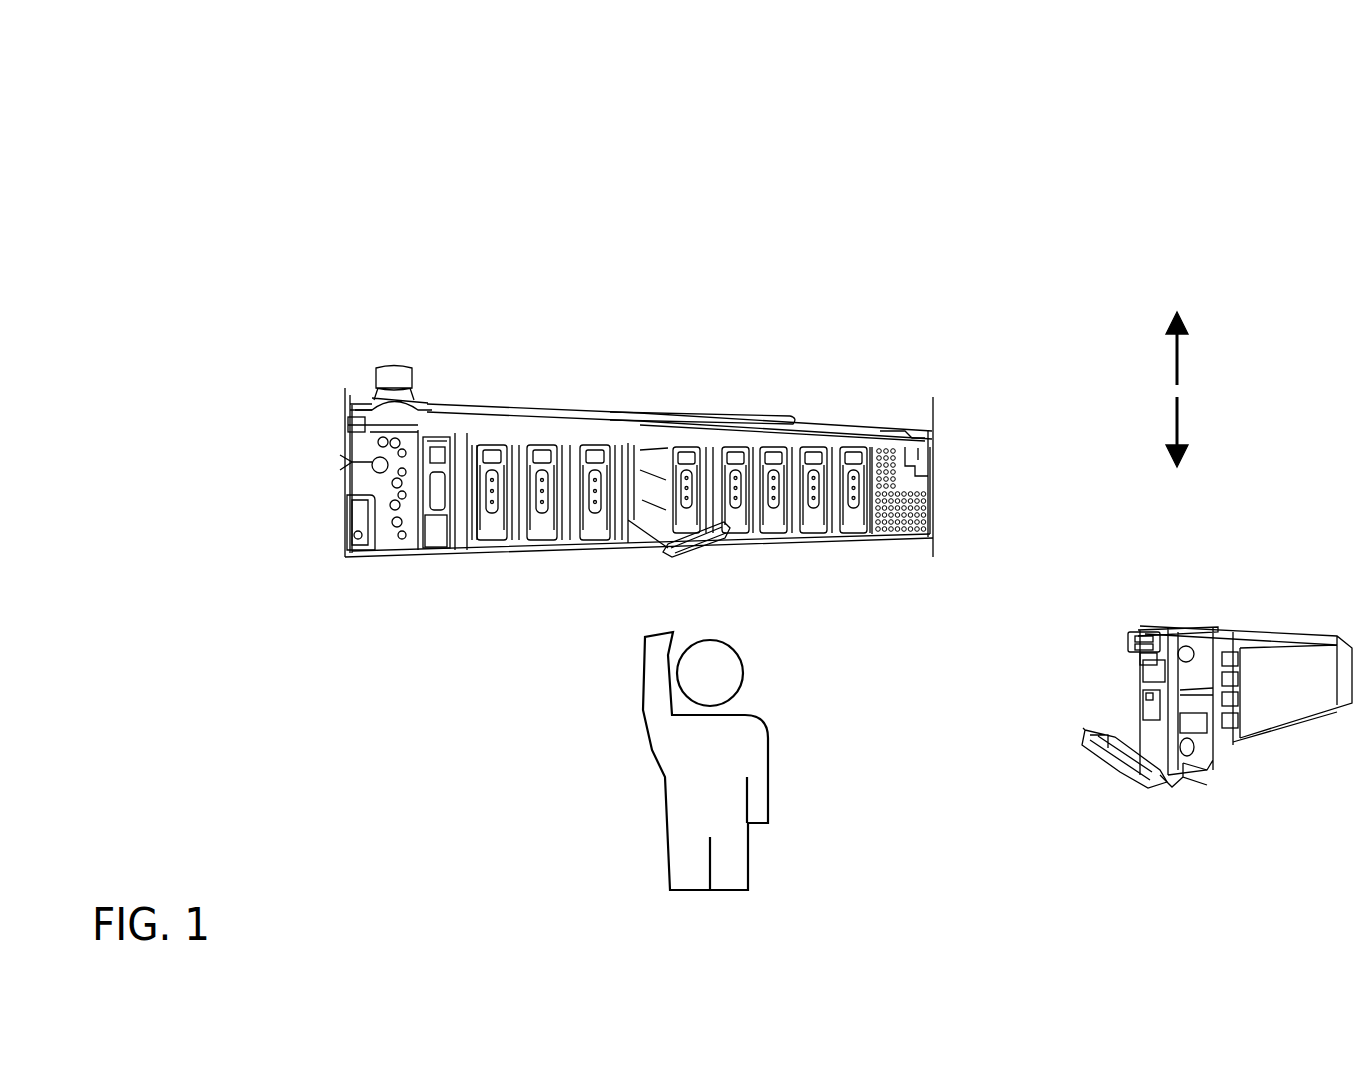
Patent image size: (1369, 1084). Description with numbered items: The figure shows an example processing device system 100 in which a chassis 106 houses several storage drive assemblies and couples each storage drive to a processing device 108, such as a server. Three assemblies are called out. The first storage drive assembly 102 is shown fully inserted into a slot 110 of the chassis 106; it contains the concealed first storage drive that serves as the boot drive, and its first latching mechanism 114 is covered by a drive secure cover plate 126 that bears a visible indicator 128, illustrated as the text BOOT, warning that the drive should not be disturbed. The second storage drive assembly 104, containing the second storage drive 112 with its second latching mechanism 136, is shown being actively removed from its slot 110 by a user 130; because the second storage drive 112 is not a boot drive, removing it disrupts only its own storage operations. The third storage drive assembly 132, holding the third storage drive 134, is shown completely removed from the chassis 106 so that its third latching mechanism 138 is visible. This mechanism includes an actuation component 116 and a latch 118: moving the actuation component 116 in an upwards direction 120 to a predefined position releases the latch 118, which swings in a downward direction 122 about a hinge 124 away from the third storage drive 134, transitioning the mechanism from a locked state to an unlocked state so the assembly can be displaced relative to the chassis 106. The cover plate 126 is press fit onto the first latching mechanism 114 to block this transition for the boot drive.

The processing device system 100 is at (160, 126).
The first storage drive assembly 102 is at (421, 570).
The second storage drive assembly 104 is at (697, 568).
The chassis 106 is at (903, 538).
The processing device 108 is at (874, 348).
The slot 110 is at (833, 535).
The second storage drive 112 is at (627, 493).
The first latching mechanism 114 is at (452, 470).
The actuation component 116 is at (1132, 648).
The latch 118 is at (1160, 785).
The upwards direction 120 is at (1223, 371).
The downward direction 122 is at (1224, 438).
The hinge 124 is at (1173, 778).
The drive secure cover plate 126 is at (425, 463).
The visible indicator 128 is at (441, 442).
The user 130 is at (768, 765).
The third storage drive assembly 132 is at (1206, 596).
The third storage drive 134 is at (1324, 692).
The second latching mechanism 136 is at (648, 467).
The third latching mechanism 138 is at (1208, 747).